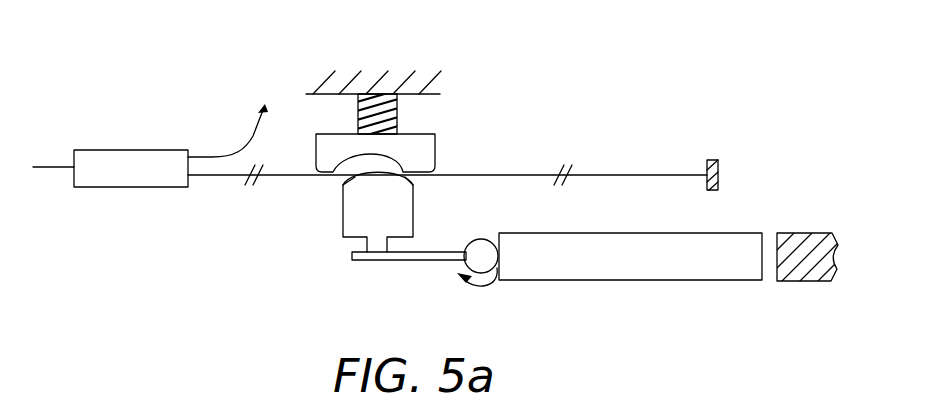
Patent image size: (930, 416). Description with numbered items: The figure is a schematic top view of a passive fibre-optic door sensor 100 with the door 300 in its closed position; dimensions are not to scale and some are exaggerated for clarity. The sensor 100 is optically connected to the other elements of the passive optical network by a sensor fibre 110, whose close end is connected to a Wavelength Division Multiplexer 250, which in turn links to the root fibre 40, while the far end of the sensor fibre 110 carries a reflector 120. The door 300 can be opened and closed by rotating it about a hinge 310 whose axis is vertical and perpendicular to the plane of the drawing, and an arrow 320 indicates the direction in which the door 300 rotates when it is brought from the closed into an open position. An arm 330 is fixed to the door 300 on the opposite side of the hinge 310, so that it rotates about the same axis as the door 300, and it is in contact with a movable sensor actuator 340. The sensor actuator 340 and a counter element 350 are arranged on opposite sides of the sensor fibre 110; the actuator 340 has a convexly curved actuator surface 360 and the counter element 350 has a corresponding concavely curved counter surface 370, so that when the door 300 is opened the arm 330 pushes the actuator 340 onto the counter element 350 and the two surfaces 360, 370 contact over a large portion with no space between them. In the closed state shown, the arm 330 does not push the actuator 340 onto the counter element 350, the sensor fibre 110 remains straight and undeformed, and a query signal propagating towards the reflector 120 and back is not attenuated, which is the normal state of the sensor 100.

The fibre-optic sensor 100 is at (178, 41).
The root fibre 40 is at (52, 169).
The Wavelength Division Multiplexer 250 is at (150, 188).
The sensor fibre 110 is at (220, 177).
The reflector 120 is at (711, 160).
The counter element 350 is at (428, 146).
The actuator surface 360 is at (340, 180).
The counter surface 370 is at (402, 177).
The sensor actuator 340 is at (343, 224).
The arm 330 is at (403, 262).
The hinge 310 is at (480, 245).
The arrow 320 is at (488, 285).
The door 300 is at (664, 268).